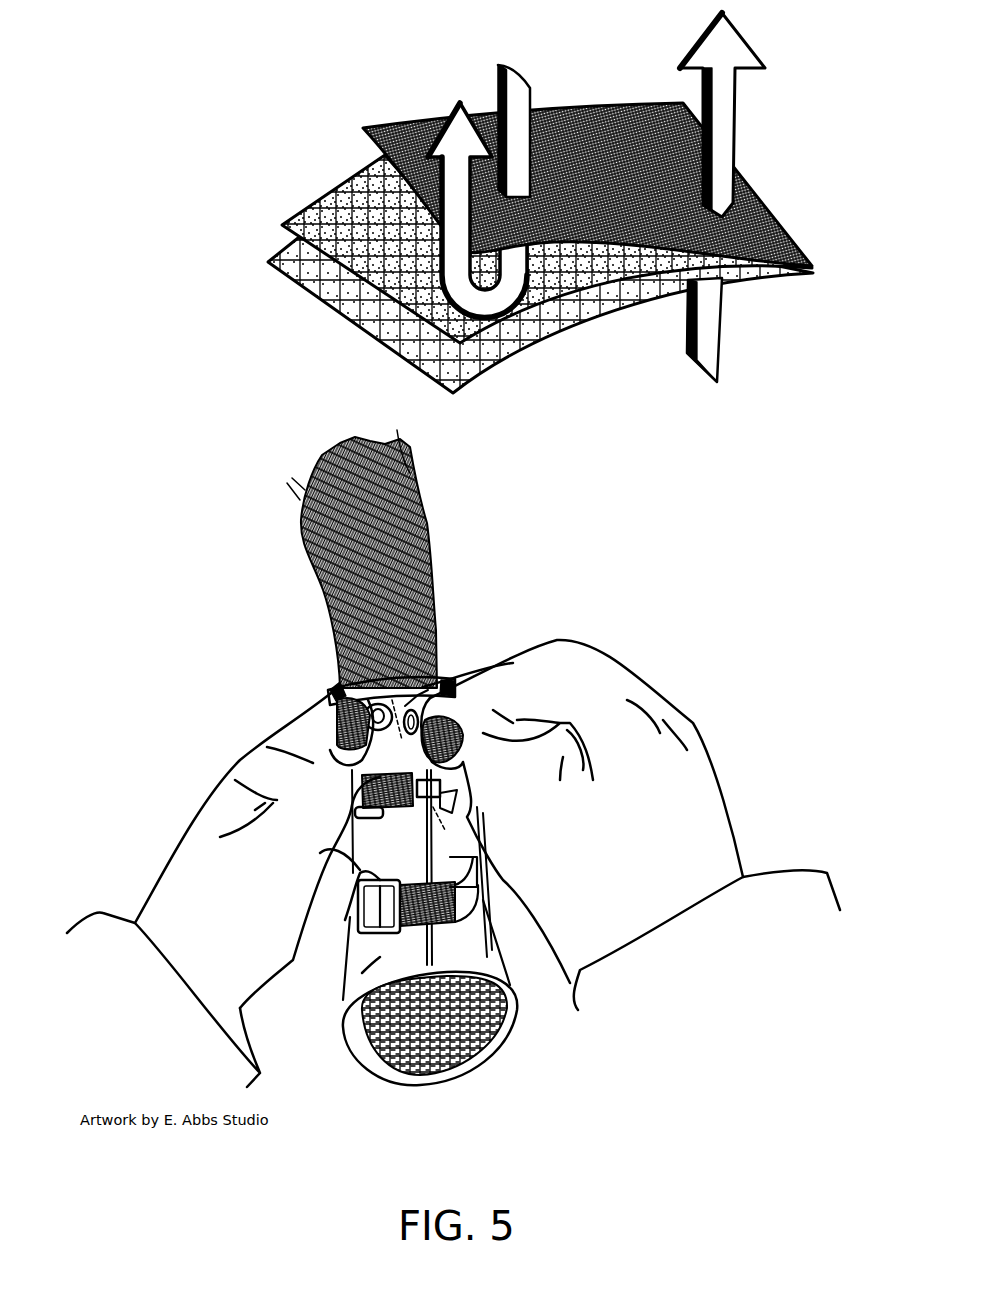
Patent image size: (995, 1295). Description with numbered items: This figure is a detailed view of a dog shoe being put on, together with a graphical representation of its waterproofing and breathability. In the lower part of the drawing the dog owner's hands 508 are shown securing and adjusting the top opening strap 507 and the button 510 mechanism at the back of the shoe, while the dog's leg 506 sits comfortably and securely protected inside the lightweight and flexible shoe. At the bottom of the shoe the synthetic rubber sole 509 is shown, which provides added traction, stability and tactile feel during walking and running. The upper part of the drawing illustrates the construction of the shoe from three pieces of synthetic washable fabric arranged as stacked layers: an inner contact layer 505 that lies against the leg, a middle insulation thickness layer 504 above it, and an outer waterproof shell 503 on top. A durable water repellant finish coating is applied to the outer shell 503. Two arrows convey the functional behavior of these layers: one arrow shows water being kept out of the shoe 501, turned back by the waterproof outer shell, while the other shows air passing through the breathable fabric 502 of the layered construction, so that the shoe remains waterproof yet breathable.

The water kept out of the shoe 501 is at (517, 100).
The air passing through the breathable fabric 502 is at (716, 110).
The outer waterproof shell 503 is at (745, 228).
The middle insulation thickness layer 504 is at (569, 272).
The inner contact layer 505 is at (497, 340).
The dog's leg 506 is at (386, 512).
The top opening strap 507 is at (414, 708).
The dog owner's hands 508 is at (678, 797).
The synthetic rubber sole 509 is at (455, 1028).
The button 510 is at (376, 710).